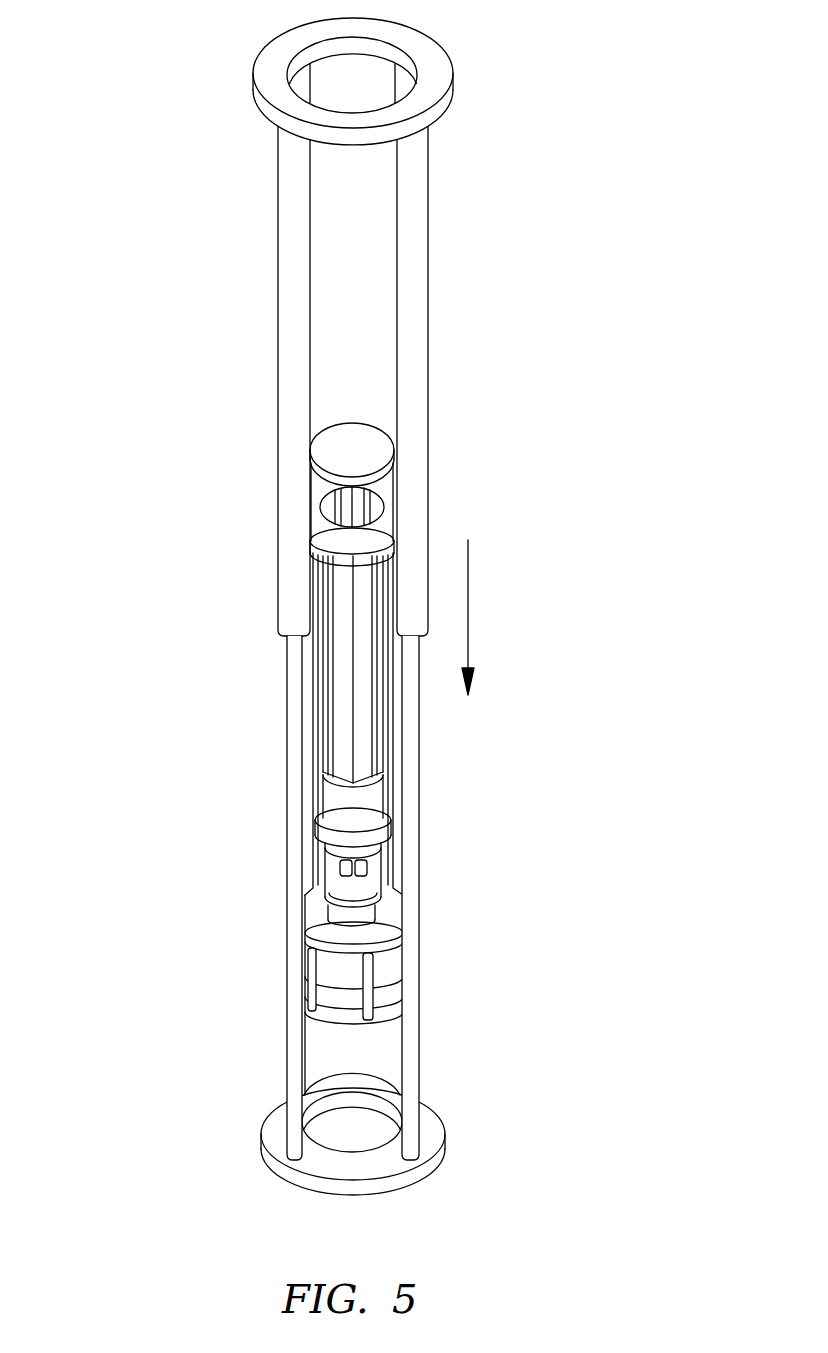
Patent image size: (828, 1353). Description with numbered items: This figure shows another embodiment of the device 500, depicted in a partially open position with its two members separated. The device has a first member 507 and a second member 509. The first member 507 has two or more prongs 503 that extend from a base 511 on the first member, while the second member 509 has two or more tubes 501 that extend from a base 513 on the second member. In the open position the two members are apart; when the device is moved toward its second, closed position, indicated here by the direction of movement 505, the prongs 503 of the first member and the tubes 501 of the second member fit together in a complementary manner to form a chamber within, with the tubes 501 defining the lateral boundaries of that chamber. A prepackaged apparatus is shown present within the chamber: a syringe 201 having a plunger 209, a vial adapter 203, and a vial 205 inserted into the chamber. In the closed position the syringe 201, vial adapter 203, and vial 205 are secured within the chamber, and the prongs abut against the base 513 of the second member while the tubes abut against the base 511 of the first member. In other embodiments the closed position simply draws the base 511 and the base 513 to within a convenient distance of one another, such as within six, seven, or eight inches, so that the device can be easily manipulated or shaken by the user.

The syringe assembly apparatus 500 is at (150, 139).
The tubes 501 is at (428, 342).
The prongs 503 is at (419, 898).
The direction of movement 505 is at (493, 617).
The first member 507 is at (427, 1119).
The second member 509 is at (395, 115).
The base 511 is at (345, 1168).
The base 513 is at (262, 117).
The syringe 201 is at (313, 665).
The vial adapter 203 is at (315, 860).
The vial 205 is at (327, 1055).
The plunger 209 is at (340, 447).